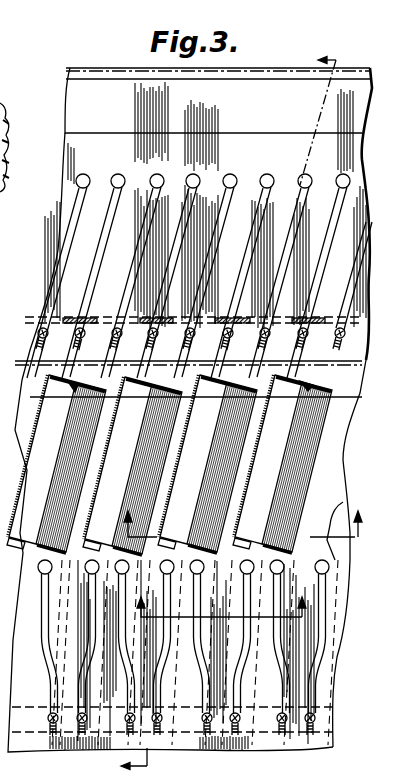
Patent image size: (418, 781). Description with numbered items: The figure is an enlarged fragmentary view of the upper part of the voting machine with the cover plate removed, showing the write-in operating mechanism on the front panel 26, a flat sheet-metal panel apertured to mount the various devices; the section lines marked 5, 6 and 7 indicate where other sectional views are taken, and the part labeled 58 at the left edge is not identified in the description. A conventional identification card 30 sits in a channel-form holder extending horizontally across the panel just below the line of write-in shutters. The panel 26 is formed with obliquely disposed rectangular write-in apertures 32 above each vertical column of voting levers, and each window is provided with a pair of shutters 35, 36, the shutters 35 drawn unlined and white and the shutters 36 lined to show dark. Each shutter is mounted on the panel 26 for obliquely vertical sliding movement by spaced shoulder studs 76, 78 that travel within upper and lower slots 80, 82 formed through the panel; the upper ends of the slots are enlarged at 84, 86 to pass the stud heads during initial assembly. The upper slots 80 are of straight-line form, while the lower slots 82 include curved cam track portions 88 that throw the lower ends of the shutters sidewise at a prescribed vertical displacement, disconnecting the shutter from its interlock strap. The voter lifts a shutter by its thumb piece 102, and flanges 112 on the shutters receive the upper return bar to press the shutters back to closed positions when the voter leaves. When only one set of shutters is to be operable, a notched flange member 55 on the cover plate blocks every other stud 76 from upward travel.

The front panel 26 is at (78, 100).
The identification card 30 is at (181, 375).
The write-in aperture 32 is at (0, 103).
The shutter 35 is at (54, 470).
The shutter 36 is at (70, 428).
The flange member 55 is at (322, 308).
The frame 58 is at (183, 256).
The shoulder stud 76 is at (42, 330).
The shoulder stud 78 is at (307, 728).
The upper slot 80 is at (106, 218).
The lower slot 82 is at (38, 588).
The enlarged slot end 84 is at (268, 172).
The enlarged slot end 86 is at (193, 540).
The curved cam track portion 88 is at (77, 650).
The thumb piece 102 is at (348, 460).
The flange 112 is at (118, 316).
The section line 5- 5 is at (248, 524).
The section line 6- 6 is at (216, 617).
The section line 7- 7 is at (235, 411).